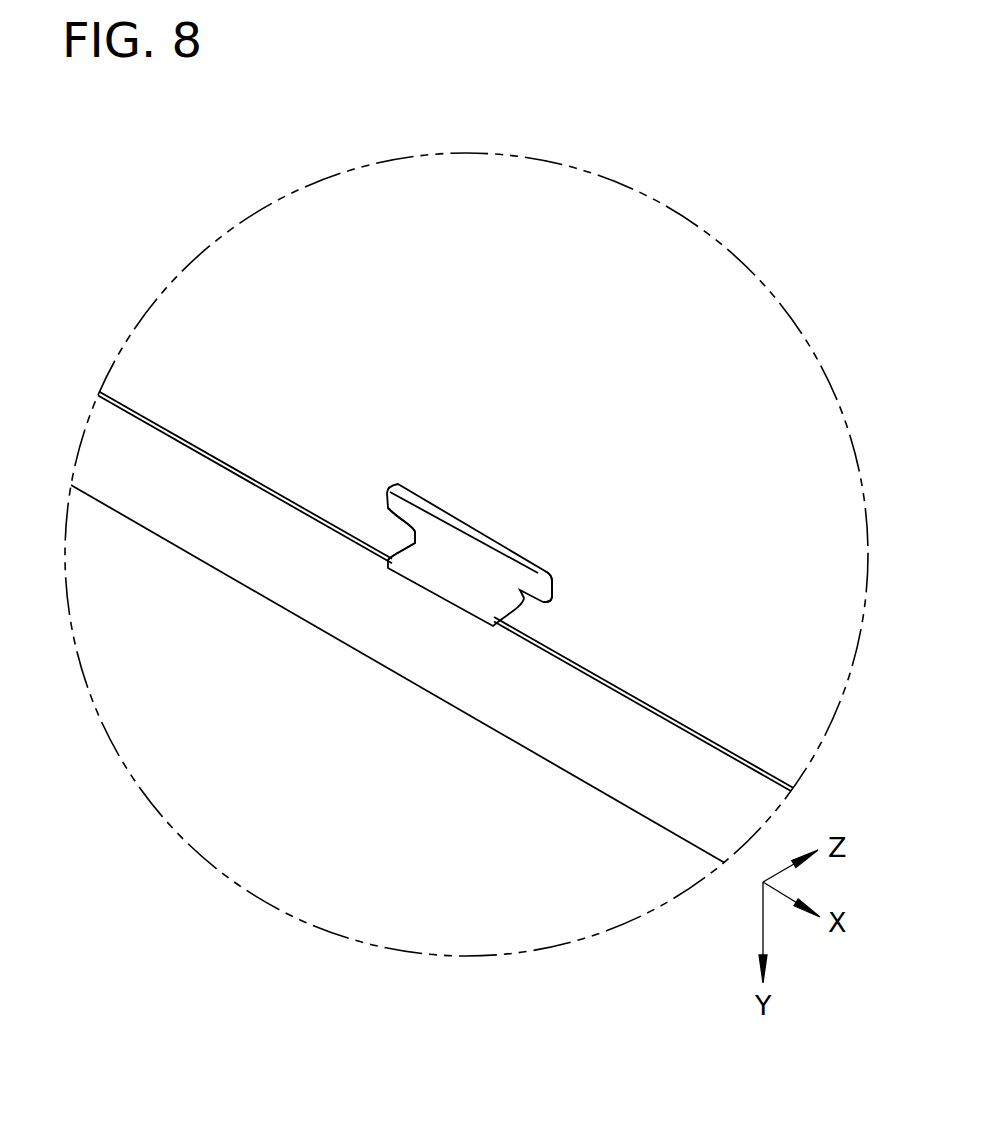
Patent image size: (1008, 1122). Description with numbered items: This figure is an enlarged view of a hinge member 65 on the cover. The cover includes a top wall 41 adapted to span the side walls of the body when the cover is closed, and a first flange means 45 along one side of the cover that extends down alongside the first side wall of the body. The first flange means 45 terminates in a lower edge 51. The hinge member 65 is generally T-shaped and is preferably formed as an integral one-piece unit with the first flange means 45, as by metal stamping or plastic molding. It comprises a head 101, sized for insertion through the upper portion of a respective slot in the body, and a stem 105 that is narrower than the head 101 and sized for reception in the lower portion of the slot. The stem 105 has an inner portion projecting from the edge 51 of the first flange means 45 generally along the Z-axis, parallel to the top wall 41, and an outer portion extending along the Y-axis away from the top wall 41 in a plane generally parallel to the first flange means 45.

The top wall 41 is at (790, 648).
The first flange means 45 is at (110, 445).
The lower edge 51 is at (148, 419).
The hinge member 65 is at (499, 610).
The head 101 is at (533, 583).
The stem 105 is at (453, 577).